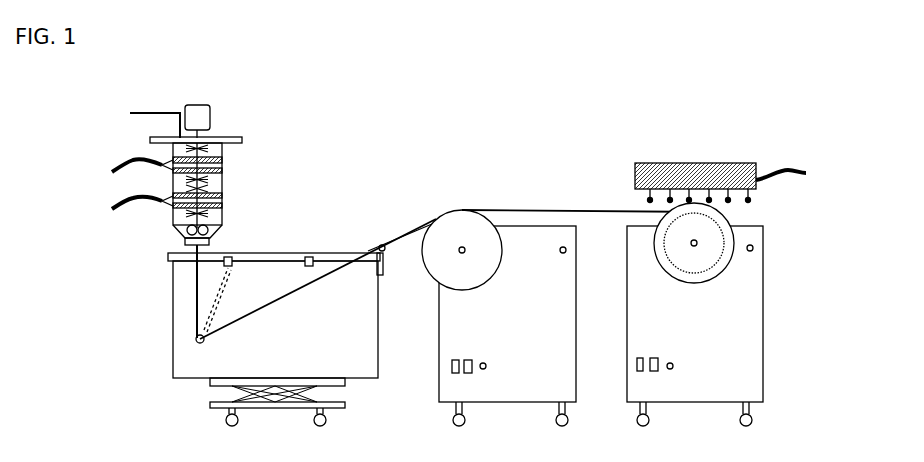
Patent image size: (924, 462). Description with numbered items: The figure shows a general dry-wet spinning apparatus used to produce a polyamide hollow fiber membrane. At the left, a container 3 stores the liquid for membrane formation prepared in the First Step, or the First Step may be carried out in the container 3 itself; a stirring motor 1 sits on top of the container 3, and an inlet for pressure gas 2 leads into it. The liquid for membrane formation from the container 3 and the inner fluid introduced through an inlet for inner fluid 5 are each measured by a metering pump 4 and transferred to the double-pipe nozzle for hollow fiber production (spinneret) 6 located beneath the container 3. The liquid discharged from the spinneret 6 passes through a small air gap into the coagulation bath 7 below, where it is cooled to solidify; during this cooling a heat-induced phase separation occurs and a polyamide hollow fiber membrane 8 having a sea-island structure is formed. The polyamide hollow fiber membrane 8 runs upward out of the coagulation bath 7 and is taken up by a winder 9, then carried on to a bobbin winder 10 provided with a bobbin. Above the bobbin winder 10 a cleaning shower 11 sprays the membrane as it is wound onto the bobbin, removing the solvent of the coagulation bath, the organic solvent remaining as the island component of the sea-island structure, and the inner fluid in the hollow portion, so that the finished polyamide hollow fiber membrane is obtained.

The stirring motor 1 is at (208, 121).
The inlet for pressure gas 2 is at (146, 122).
The container 3 is at (216, 179).
The metering pump 4 is at (214, 235).
The inlet for inner fluid 5 is at (185, 242).
The double-pipe nozzle for hollow fiber production (spinneret) 6 is at (212, 243).
The coagulation bath 7 is at (276, 335).
The polyamide hollow fiber membrane 8 is at (316, 281).
The winder 9 is at (565, 318).
The bobbin winder 10 is at (695, 314).
The cleaning shower 11 is at (720, 175).